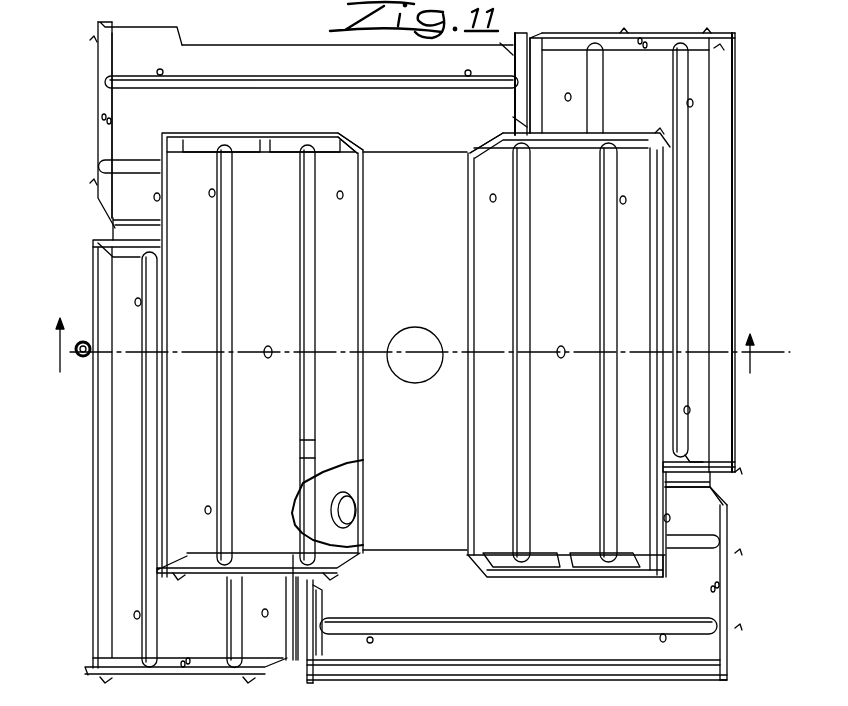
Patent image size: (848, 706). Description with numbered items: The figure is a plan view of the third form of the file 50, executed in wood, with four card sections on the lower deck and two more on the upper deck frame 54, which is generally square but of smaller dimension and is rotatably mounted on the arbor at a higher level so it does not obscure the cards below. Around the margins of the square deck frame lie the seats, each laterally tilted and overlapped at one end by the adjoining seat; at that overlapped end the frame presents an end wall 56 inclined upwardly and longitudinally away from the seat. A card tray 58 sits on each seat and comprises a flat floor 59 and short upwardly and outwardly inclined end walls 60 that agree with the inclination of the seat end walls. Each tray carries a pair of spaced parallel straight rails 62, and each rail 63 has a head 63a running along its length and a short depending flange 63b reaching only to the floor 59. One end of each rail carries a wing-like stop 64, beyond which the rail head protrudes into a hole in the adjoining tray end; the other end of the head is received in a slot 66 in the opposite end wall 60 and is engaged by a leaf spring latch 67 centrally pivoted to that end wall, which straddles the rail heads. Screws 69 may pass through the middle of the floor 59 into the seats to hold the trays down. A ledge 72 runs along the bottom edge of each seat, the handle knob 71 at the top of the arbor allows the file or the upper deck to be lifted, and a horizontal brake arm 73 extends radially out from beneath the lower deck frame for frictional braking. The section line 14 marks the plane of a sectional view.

The section line 14- 14 is at (411, 345).
The file 50 is at (715, 133).
The upper deck frame 54 is at (431, 296).
The end wall 56 is at (113, 230).
The card tray 58 is at (233, 47).
The floor 59 is at (200, 62).
The end wall 60 is at (112, 26).
The rail 62 is at (348, 510).
The rod 63 is at (135, 167).
The rail head 63a is at (300, 447).
The depending flange 63b is at (313, 458).
The stop 64 is at (113, 257).
The slot 66 is at (107, 67).
The leaf spring latch 67 is at (97, 133).
The screw 69 is at (268, 346).
The handle knob 71 is at (408, 383).
The ledge 72 is at (182, 40).
The brake arm 73 is at (81, 358).